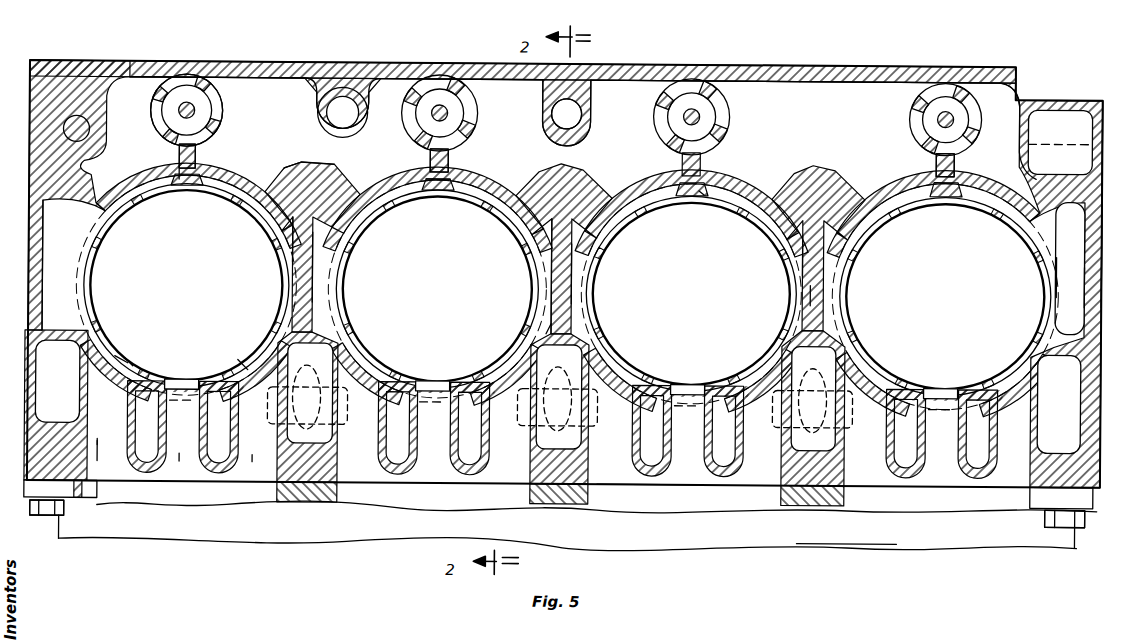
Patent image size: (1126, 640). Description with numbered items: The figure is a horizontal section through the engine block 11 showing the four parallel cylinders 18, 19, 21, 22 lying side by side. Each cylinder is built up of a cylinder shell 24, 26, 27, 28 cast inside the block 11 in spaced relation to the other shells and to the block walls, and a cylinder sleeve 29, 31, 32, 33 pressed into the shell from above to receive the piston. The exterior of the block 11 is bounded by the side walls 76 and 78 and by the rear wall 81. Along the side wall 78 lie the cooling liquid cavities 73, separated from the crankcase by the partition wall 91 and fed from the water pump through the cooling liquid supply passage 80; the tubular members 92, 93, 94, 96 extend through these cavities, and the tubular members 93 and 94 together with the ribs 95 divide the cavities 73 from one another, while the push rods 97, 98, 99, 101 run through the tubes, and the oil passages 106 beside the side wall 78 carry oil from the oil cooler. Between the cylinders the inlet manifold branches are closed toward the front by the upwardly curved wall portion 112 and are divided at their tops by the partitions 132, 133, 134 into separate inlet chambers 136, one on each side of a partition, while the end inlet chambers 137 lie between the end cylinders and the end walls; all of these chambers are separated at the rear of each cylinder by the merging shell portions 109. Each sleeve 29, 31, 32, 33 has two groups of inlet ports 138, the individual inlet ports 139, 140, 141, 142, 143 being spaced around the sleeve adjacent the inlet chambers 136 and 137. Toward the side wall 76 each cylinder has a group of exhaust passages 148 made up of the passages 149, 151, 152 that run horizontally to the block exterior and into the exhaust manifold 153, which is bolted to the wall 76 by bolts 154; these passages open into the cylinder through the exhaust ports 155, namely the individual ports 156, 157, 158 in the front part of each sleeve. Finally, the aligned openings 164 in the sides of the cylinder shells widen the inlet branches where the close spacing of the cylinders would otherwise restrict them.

The engine block 11 is at (1090, 94).
The cylinder 18 is at (120, 204).
The cylinder 19 is at (522, 196).
The cylinder 21 is at (614, 222).
The cylinder 22 is at (937, 166).
The cylinder shell 24 is at (298, 230).
The cylinder shell 26 is at (585, 258).
The cylinder shell 27 is at (800, 246).
The cylinder shell 28 is at (1054, 264).
The cylinder sleeve 29 is at (180, 180).
The cylinder sleeve 31 is at (461, 239).
The cylinder sleeve 32 is at (702, 192).
The cylinder sleeve 33 is at (942, 205).
The cylinder cooling cavities 73 is at (276, 88).
The side wall 76 is at (668, 490).
The side wall 78 is at (416, 68).
The cooling liquid supply passage 80 is at (657, 70).
The rear wall 81 is at (1062, 289).
The partition wall 91 is at (835, 92).
The tubular member 92 is at (158, 127).
The tubular member 93 is at (473, 100).
The tubular member 94 is at (731, 106).
The ribs 95 is at (449, 155).
The tubular member 96 is at (912, 128).
The push rod 97 is at (180, 107).
The push rod 98 is at (450, 115).
The push rod 99 is at (684, 110).
The push rod 101 is at (938, 114).
The oil passages 106 is at (574, 118).
The cylinder shell portion 109 is at (192, 172).
The upwardly curved wall portion 112 is at (310, 352).
The partition 132 is at (316, 262).
The partition 133 is at (562, 282).
The partition 134 is at (813, 285).
The inlet chambers 136 is at (280, 190).
The inlet chambers 137 is at (30, 240).
The groups of inlet ports 138 is at (92, 285).
The inlet port 139 is at (358, 314).
The inlet port 140 is at (352, 272).
The inlet port 141 is at (355, 238).
The inlet port 142 is at (385, 222).
The inlet port 143 is at (434, 188).
The groups of exhaust passages 148 is at (100, 440).
The exhaust passage 149 is at (118, 458).
The exhaust passage 151 is at (182, 454).
The exhaust passage 152 is at (255, 455).
The exhaust manifold 153 is at (850, 537).
The bolts 154 is at (48, 516).
The exhaust ports 155 is at (128, 356).
The exhaust port 156 is at (118, 355).
The exhaust port 157 is at (179, 378).
The exhaust port 158 is at (245, 360).
The openings 164 is at (548, 332).